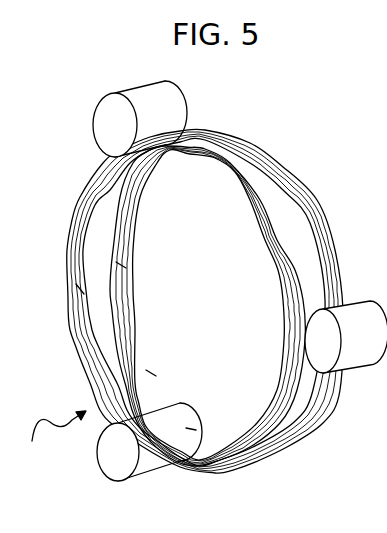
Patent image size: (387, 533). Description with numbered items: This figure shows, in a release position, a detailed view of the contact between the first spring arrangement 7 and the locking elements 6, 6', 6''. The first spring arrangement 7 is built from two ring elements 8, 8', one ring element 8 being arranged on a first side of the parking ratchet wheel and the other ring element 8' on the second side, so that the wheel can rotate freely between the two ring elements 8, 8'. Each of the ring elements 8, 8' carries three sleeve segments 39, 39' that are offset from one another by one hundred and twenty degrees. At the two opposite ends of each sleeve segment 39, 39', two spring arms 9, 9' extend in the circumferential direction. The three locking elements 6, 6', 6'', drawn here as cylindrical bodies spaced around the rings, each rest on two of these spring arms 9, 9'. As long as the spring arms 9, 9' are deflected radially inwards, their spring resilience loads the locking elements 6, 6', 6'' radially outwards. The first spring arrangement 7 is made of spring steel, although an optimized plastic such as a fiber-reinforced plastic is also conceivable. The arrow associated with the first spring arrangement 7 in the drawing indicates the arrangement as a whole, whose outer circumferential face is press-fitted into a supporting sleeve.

The locking element 6 is at (176, 114).
The locking element 6' is at (346, 362).
The locking element 6'' is at (145, 467).
The first spring arrangement 7 is at (52, 441).
The ring element 8 is at (207, 288).
The ring element 8' is at (237, 306).
The spring arm 9 is at (173, 355).
The spring arm 9' is at (214, 396).
The sleeve segment 39 is at (170, 246).
The sleeve segment 39' is at (146, 294).